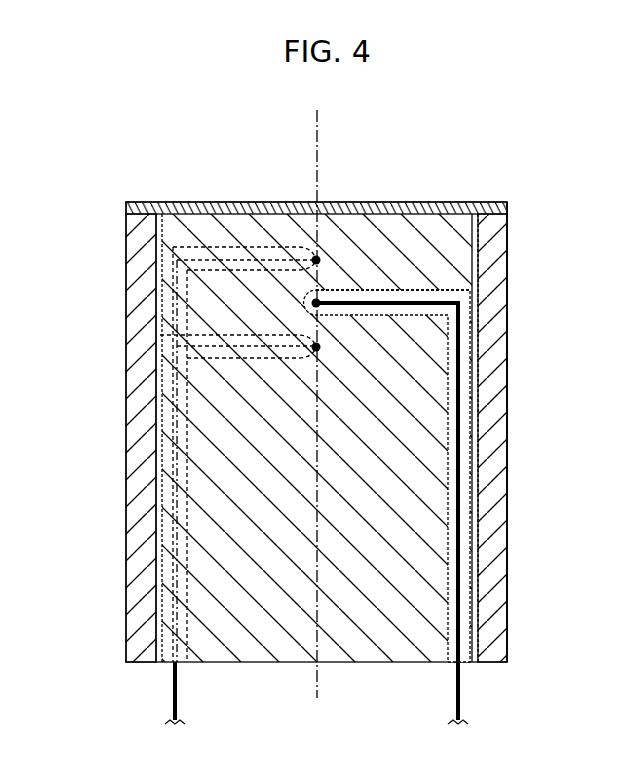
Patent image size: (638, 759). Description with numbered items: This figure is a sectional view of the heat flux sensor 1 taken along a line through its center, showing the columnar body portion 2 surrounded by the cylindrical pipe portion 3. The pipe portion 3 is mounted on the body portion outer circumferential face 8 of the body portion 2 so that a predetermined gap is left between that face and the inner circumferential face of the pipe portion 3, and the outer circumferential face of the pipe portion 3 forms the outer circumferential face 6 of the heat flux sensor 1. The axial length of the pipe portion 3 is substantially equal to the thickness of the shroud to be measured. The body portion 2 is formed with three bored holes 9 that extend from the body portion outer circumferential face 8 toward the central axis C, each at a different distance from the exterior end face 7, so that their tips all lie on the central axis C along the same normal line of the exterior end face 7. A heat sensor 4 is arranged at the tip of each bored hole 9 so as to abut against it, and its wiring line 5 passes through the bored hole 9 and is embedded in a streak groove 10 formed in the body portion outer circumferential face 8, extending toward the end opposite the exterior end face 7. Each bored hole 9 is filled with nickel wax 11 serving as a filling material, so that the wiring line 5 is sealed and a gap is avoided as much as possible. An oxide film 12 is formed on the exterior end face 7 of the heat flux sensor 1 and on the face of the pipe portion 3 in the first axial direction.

The heat flux sensor 1 is at (108, 158).
The body portion 2 is at (197, 548).
The pipe portion 3 is at (498, 253).
The heat sensor 4 is at (312, 301).
The wiring line 5 is at (460, 470).
The outer circumferential face 6 is at (507, 564).
The exterior end face 7 is at (300, 264).
The body portion outer circumferential face 8 is at (160, 420).
The bored hole 9 is at (413, 292).
The streak groove 10 is at (463, 389).
The nickel wax 11 is at (468, 312).
The oxide film 12 is at (495, 205).
The central axis C is at (318, 166).